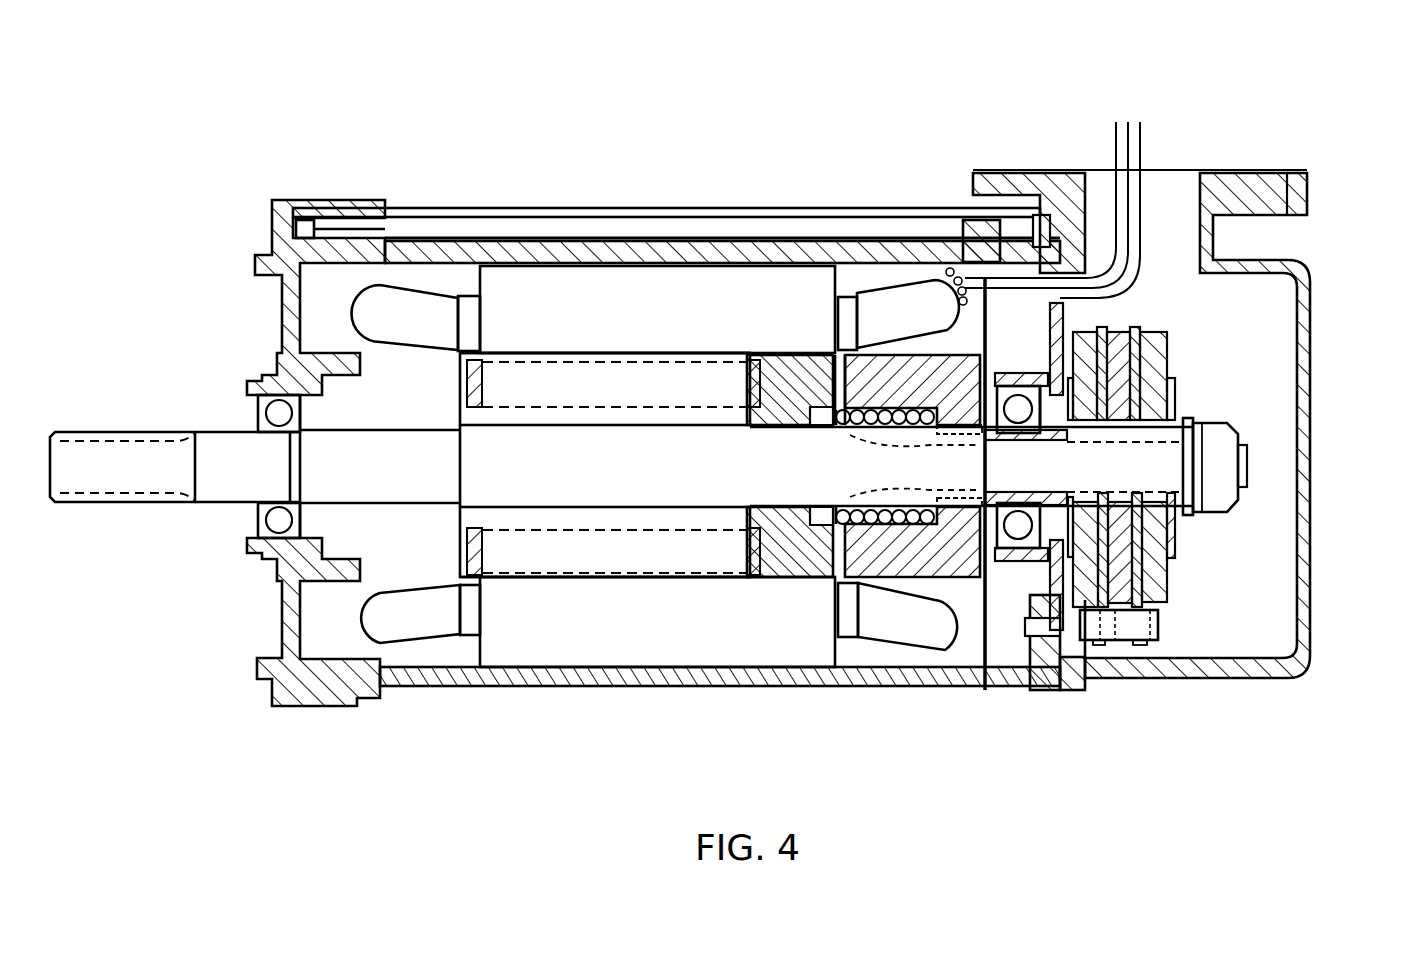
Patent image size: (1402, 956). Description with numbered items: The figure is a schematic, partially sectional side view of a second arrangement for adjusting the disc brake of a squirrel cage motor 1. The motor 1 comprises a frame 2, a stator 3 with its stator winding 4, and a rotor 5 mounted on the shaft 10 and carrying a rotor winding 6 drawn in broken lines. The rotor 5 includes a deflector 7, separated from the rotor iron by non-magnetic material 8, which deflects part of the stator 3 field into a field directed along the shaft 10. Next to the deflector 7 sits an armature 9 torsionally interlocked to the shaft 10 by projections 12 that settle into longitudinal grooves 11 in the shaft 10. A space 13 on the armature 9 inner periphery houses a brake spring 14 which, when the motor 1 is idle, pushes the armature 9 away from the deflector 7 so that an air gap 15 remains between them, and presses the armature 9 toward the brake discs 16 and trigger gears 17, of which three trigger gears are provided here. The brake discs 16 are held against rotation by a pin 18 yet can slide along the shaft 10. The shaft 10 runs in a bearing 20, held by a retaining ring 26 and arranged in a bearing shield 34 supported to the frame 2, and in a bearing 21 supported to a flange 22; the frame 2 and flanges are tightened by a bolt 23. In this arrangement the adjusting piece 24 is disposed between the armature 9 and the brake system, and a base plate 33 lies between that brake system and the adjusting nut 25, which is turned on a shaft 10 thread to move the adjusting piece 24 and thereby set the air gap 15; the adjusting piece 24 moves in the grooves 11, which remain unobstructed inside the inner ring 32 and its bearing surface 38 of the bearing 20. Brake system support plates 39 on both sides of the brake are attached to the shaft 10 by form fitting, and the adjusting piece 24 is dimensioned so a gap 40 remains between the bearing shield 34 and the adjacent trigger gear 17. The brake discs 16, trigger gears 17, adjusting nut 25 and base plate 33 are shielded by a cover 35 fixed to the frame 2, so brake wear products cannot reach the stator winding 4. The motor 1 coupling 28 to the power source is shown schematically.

The squirrel cage motor 1 is at (556, 168).
The frame 2 is at (688, 250).
The stator 3 is at (551, 331).
The stator winding 4 is at (402, 316).
The rotor 5 is at (446, 376).
The rotor winding 6 is at (612, 393).
The deflector 7 is at (798, 553).
The non-magnetic material 8 is at (748, 562).
The armature 9 is at (876, 392).
The shaft 10 is at (240, 465).
The longitudinal grooves 11 is at (896, 494).
The projections 12 is at (950, 432).
The space 13 is at (838, 420).
The brake spring 14 is at (836, 512).
The air gap 15 is at (840, 388).
The brake disc 16 is at (1140, 337).
The trigger gear 17 is at (1160, 363).
The pin 18 is at (1122, 627).
The bearing 20 is at (1017, 400).
The bearing 21 is at (280, 521).
The flange 22 is at (302, 572).
The bolt 23 is at (824, 228).
The adjusting piece 24 is at (1032, 443).
The adjusting nut 25 is at (1215, 432).
The bearing retaining ring 26 is at (986, 420).
The coupling 28 is at (1131, 114).
The inner ring 32 is at (1042, 505).
The base plate 33 is at (1195, 514).
The bearing shield 34 is at (1063, 318).
The cover 35 is at (1306, 480).
The bearing surface 38 is at (1015, 535).
The brake system support plates 39 is at (1178, 552).
The gap 40 is at (1084, 612).